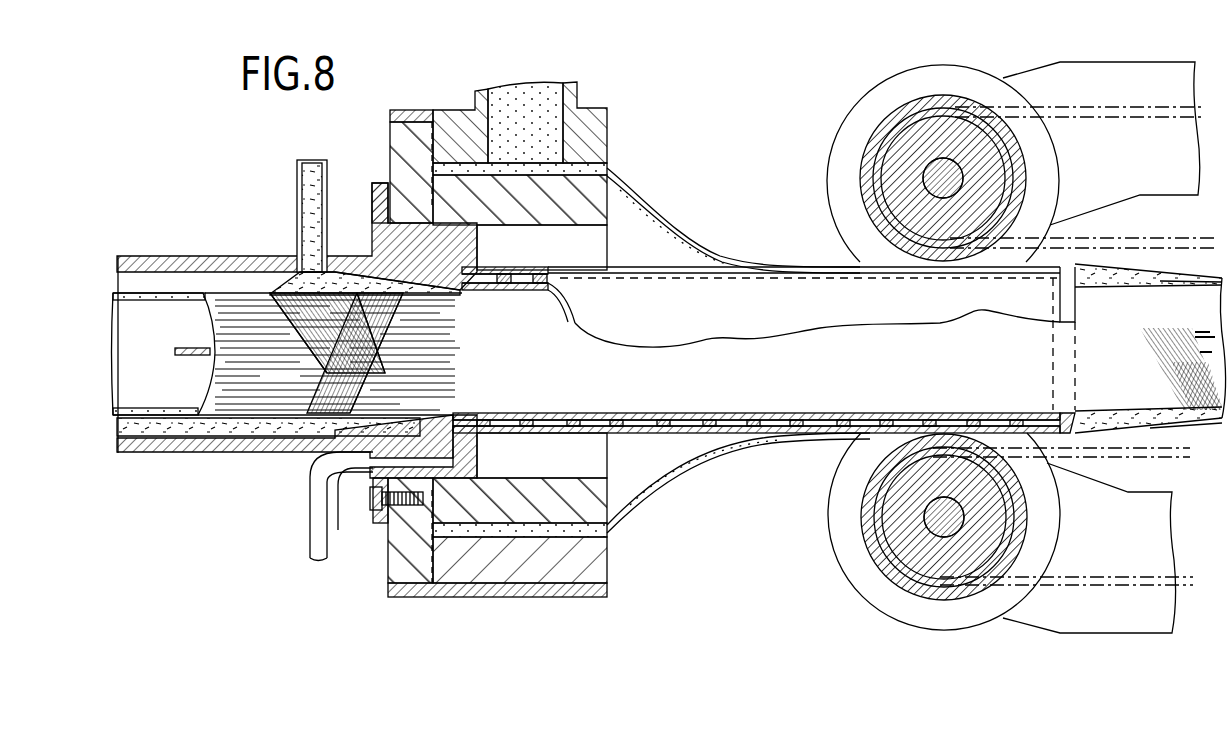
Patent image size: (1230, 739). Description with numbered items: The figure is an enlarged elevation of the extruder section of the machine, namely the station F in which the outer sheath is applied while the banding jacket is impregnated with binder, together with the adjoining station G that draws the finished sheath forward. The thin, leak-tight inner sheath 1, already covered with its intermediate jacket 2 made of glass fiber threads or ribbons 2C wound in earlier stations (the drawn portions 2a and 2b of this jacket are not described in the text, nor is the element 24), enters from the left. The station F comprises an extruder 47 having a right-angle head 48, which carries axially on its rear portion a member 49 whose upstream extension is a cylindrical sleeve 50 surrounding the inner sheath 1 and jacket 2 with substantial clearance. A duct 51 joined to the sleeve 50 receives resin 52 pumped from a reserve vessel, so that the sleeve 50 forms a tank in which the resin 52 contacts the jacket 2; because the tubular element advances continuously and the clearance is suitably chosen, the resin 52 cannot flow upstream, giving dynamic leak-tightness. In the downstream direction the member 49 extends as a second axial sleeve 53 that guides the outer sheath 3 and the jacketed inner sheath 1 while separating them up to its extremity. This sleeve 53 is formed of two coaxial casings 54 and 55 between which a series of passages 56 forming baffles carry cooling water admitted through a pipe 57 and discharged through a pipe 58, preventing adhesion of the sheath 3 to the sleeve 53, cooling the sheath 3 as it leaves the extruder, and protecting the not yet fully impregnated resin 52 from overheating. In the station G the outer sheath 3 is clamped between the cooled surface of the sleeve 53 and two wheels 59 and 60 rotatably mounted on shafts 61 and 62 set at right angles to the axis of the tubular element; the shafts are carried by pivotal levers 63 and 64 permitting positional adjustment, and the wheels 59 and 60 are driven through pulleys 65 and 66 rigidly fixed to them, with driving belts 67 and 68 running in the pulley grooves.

The inner sheath 1 is at (207, 415).
The intermediate jacket 2 is at (327, 413).
The housing body portion 2a is at (302, 338).
The housing body portion 2b is at (300, 388).
The glass fiber threads or ribbons 2C is at (387, 318).
The outer sheath 3 is at (660, 222).
The inner nozzle tube 24 is at (183, 347).
The extruder 47 is at (441, 101).
The right-angle head 48 is at (600, 136).
The member 49 is at (380, 207).
The cylindrical sleeve 50 is at (247, 262).
The duct 51 is at (300, 195).
The resin 52 is at (312, 172).
The second axial sleeve 53 is at (683, 262).
The casing 54 is at (778, 413).
The casing 55 is at (685, 440).
The passages 56 is at (822, 413).
The pipe 57 is at (312, 538).
The pipe 58 is at (340, 524).
The wheel 59 is at (966, 73).
The wheel 60 is at (852, 577).
The shaft 61 is at (923, 177).
The shaft 62 is at (930, 517).
The pivotal lever 63 is at (1137, 73).
The pivotal lever 64 is at (1160, 550).
The pulley 65 is at (1000, 192).
The pulley 66 is at (1020, 520).
The driving belt 67 is at (1130, 115).
The driving belt 68 is at (1158, 455).
The station F is at (533, 155).
The station G is at (999, 144).